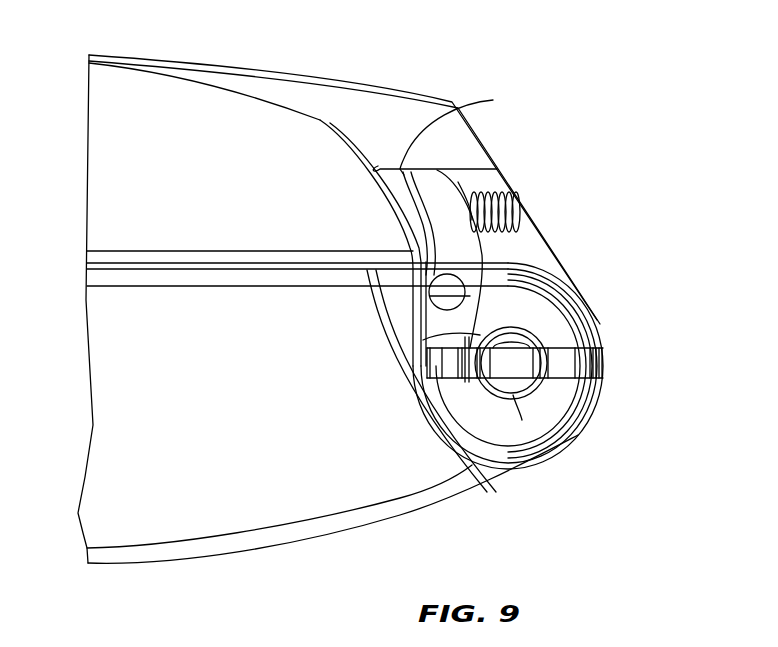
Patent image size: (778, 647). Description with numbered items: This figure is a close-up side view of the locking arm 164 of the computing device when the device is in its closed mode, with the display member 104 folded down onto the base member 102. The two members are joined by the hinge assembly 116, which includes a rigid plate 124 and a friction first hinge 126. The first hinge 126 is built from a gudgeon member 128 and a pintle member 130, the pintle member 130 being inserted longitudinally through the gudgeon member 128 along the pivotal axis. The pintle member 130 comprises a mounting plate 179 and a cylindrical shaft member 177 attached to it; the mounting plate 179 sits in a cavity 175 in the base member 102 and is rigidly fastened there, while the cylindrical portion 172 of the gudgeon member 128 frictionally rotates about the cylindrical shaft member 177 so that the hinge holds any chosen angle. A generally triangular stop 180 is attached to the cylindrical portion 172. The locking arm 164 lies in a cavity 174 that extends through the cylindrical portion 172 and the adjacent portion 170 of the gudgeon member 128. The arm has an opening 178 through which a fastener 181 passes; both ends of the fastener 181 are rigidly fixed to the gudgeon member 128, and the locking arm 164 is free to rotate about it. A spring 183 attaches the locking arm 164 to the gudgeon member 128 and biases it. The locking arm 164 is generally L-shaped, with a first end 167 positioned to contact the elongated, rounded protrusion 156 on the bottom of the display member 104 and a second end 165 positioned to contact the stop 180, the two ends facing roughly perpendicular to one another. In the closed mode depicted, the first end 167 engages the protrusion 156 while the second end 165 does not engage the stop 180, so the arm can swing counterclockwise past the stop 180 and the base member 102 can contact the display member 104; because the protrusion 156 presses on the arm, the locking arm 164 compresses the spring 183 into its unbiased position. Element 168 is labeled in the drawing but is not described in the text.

The base member 102 is at (201, 415).
The display member 104 is at (190, 136).
The hinge assembly 116 is at (313, 73).
The rigid plate 124 is at (430, 99).
The first hinge 126 is at (597, 325).
The gudgeon member 128 is at (603, 392).
The pintle member 130 is at (555, 438).
The protrusion 156 is at (378, 166).
The locking arm 164 is at (468, 165).
The second end 165 is at (392, 365).
The first end 167 is at (464, 132).
The flange 168 is at (399, 234).
The portion 170 is at (553, 251).
The cylindrical portion 172 is at (580, 430).
The cavity 174 is at (518, 250).
The cavity 175 is at (505, 422).
The cylindrical shaft member 177 is at (527, 393).
The opening 178 is at (432, 296).
The mounting plate 179 is at (603, 360).
The stop 180 is at (412, 337).
The fastener 181 is at (465, 292).
The spring 183 is at (530, 203).